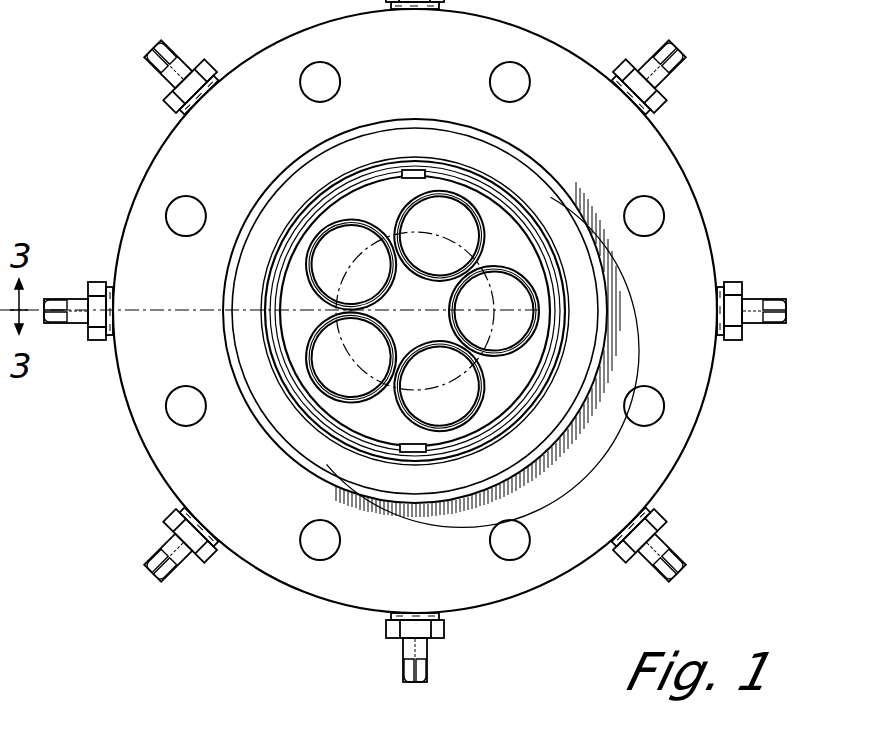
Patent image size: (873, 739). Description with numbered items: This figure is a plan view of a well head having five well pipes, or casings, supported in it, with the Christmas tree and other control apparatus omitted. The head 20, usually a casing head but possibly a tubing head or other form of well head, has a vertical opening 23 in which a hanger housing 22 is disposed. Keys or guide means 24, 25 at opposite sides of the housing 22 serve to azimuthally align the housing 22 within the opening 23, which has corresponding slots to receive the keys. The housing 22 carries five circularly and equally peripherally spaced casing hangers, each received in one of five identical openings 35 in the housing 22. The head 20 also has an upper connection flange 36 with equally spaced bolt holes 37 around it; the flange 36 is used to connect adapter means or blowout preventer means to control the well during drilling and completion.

The head 20 is at (693, 424).
The hanger housing 22 is at (522, 362).
The vertical opening 23 is at (492, 406).
The key 24 is at (408, 443).
The key 25 is at (413, 169).
The openings 35 is at (372, 278).
The upper connection flange 36 is at (673, 152).
The bolt holes 37 is at (628, 209).